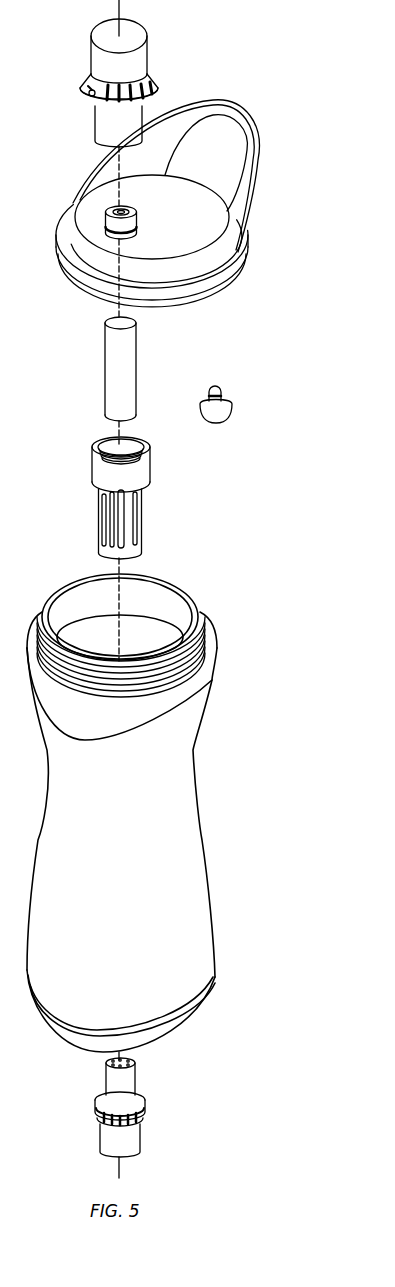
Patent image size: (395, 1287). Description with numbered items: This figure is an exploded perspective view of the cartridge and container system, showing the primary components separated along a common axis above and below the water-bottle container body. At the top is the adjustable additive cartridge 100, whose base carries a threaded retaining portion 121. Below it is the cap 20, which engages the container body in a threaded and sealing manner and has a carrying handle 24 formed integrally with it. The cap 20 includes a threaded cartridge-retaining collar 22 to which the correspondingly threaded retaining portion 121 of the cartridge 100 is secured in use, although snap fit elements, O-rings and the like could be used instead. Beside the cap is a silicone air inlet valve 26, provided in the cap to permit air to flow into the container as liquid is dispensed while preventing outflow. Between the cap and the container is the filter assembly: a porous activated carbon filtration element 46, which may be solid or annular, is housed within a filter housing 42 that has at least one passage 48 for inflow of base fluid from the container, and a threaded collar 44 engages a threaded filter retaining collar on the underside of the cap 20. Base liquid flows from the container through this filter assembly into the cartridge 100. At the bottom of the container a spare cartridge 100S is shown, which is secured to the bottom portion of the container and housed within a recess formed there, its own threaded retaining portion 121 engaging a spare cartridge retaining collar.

The adjustable additive cartridge 100 is at (90, 51).
The threaded retaining portion 121 is at (154, 79).
The cap 20 is at (233, 263).
The carrying handle 24 is at (261, 147).
The cartridge-retaining collar 22 is at (105, 221).
The filtration element 46 is at (105, 370).
The air inlet valve 26 is at (233, 408).
The threaded collar 44 is at (151, 465).
The filter housing 42 is at (124, 525).
The passage 48 is at (108, 518).
The spare cartridge 100S is at (142, 1135).